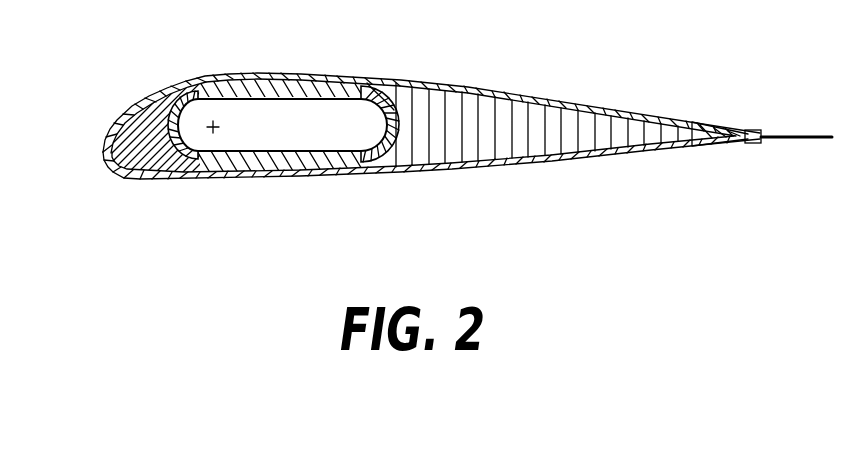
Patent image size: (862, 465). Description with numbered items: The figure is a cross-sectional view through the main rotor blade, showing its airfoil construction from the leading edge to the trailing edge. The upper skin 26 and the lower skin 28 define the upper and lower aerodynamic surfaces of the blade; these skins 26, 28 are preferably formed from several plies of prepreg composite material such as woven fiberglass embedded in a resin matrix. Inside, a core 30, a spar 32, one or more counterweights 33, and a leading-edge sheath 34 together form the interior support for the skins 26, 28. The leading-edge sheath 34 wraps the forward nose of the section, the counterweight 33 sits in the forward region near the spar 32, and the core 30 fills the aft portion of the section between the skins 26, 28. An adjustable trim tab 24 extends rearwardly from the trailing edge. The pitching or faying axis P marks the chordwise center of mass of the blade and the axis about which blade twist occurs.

The adjustable trim tab 24 is at (795, 139).
The upper skin 26 is at (449, 80).
The lower skin 28 is at (428, 176).
The core 30 is at (568, 102).
The spar 32 is at (415, 80).
The counterweight 33 is at (140, 117).
The leading-edge sheath 34 is at (106, 172).
The pitching axis P is at (211, 138).